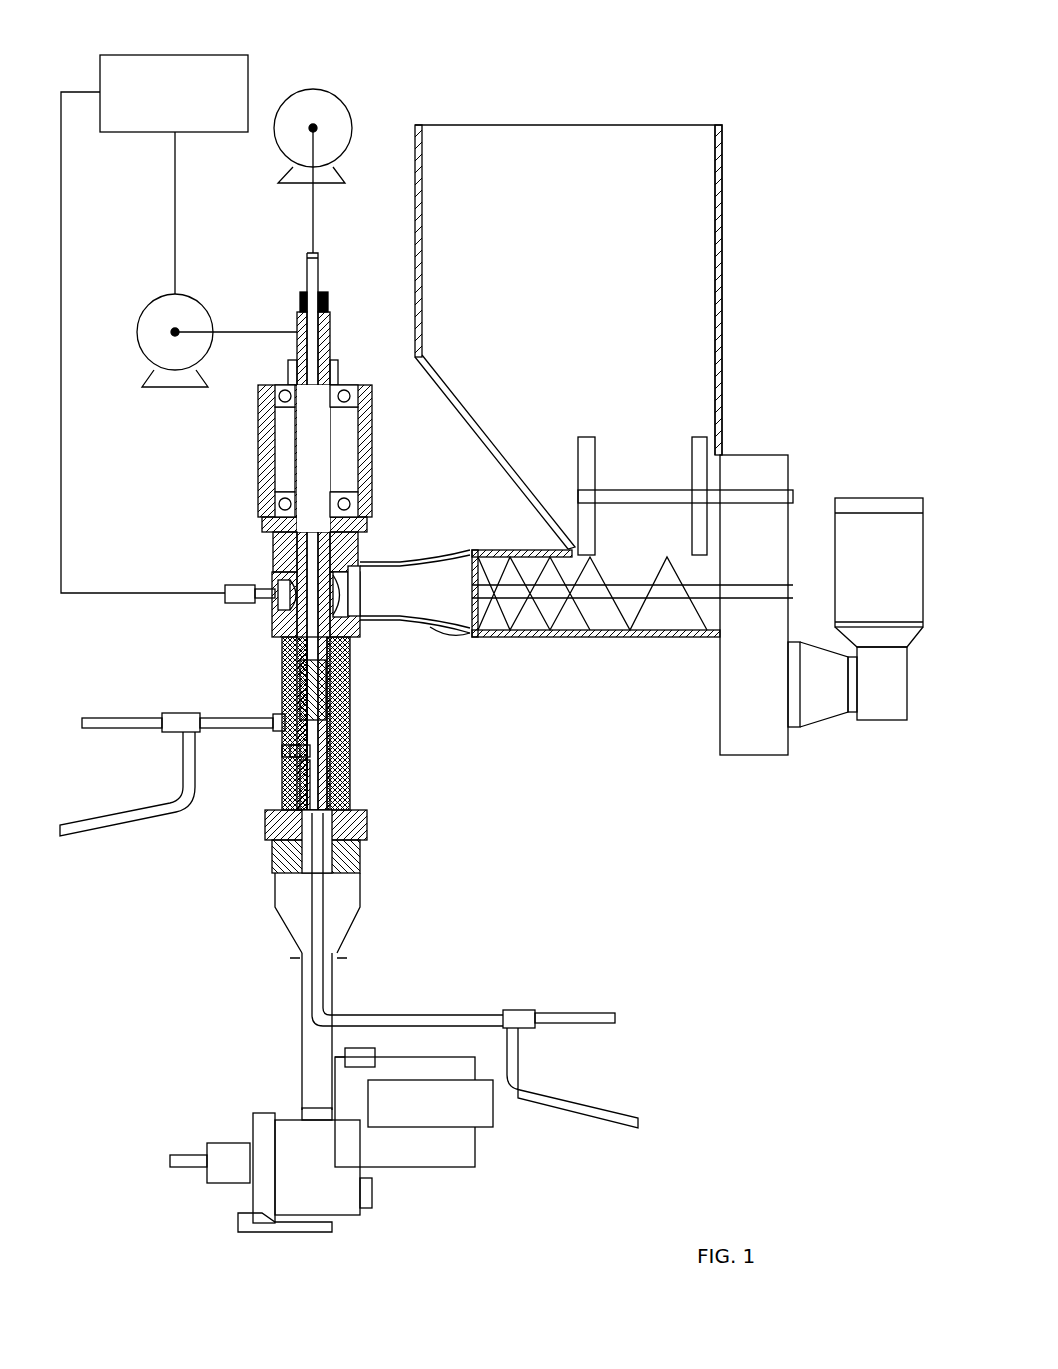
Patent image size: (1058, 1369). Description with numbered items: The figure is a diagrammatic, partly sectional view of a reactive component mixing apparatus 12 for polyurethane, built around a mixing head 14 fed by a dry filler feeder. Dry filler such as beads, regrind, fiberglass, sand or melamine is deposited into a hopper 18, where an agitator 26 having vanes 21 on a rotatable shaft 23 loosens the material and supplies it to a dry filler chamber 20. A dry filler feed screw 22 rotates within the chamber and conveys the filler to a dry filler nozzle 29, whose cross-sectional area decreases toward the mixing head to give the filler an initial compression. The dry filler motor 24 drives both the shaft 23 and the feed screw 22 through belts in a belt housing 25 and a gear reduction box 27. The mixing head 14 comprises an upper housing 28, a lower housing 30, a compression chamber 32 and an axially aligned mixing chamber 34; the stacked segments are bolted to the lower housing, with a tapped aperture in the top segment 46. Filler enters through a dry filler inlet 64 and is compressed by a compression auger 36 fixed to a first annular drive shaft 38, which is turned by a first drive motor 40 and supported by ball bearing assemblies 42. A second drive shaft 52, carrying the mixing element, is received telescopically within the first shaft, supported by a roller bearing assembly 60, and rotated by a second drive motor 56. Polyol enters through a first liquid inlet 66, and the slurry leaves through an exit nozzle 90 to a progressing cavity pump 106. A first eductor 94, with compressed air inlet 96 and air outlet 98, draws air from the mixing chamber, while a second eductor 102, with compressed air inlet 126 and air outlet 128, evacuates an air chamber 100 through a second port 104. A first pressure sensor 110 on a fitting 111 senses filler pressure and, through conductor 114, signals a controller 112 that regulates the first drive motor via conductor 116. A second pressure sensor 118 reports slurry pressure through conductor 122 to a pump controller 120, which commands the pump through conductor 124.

The reactive component mixing apparatus 12 is at (636, 873).
The mixing head 14 is at (218, 828).
The hopper 18 is at (722, 200).
The dry filler chamber 20 is at (565, 637).
The vanes 21 is at (577, 462).
The dry filler feed screw 22 is at (652, 600).
The rotatable shaft 23 is at (640, 490).
The dry filler motor 24 is at (893, 498).
The belt housing 25 is at (720, 738).
The agitator 26 is at (660, 432).
The gear reduction box 27 is at (828, 722).
The upper housing 28 is at (372, 456).
The dry filler nozzle 29 is at (432, 627).
The lower housing 30 is at (367, 812).
The compression chamber 32 is at (350, 672).
The mixing chamber 34 is at (350, 757).
The compression auger 36 is at (360, 650).
The first annular drive shaft 38 is at (330, 345).
The first drive motor 40 is at (203, 305).
The ball bearing assemblies 42 is at (355, 386).
The top segment 46 is at (272, 532).
The second drive shaft 52 is at (318, 270).
The second drive motor 56 is at (340, 95).
The roller bearing assembly 60 is at (322, 305).
The dry filler inlet 64 is at (362, 590).
The first liquid inlet 66 is at (355, 752).
The exit nozzle 90 is at (365, 905).
The first eductor 94 is at (190, 713).
The compressed air inlet 96 is at (98, 828).
The air outlet 98 is at (113, 718).
The air chamber 100 is at (293, 750).
The second eductor 102 is at (509, 1012).
The second port 104 is at (323, 912).
The progressing cavity pump 106 is at (347, 1215).
The first pressure sensor 110 is at (225, 590).
The fitting 111 is at (270, 607).
The controller 112 is at (207, 55).
The conductor 114 is at (62, 483).
The conductor 116 is at (173, 182).
The second pressure sensor 118 is at (357, 1048).
The pump controller 120 is at (487, 1127).
The conductor 122 is at (427, 1057).
The conductor 124 is at (432, 1167).
The compressed air inlet 126 is at (567, 1090).
The air outlet 128 is at (582, 1013).